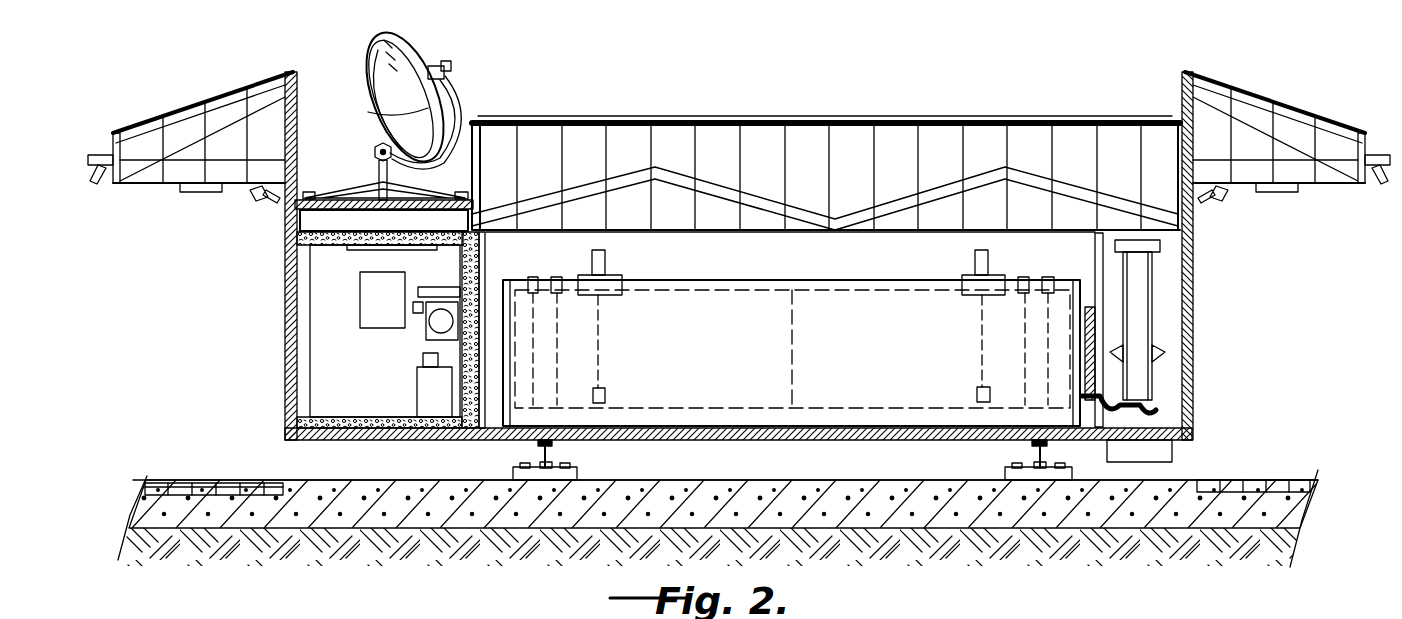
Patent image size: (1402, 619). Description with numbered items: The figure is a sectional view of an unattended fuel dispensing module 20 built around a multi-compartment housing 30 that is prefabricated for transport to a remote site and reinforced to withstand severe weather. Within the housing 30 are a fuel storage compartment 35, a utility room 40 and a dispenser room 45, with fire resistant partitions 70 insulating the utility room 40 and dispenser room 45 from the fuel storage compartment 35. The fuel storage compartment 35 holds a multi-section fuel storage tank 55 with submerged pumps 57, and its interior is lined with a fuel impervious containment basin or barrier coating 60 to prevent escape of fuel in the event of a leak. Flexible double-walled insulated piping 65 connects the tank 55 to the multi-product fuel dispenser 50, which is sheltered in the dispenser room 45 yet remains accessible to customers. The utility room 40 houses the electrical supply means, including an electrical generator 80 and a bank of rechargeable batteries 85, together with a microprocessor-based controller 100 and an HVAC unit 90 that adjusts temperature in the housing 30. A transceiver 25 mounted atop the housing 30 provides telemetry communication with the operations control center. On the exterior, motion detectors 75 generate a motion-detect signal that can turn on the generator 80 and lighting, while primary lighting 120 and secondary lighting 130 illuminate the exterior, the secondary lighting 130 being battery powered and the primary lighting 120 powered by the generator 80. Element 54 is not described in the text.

The fuel dispensing module 20 is at (767, 100).
The transceiver 25 is at (403, 50).
The multi-compartment housing 30 is at (282, 243).
The fuel storage compartment 35 is at (842, 270).
The utility room 40 is at (330, 362).
The dispenser room 45 is at (1157, 290).
The multi-product fuel dispenser 50 is at (1142, 338).
The sensor probe 54 is at (558, 338).
The fuel storage tank 55 is at (880, 360).
The submerged pump 57 is at (607, 395).
The containment basin or barrier coating 60 is at (540, 436).
The flexible double-walled insulated piping 65 is at (1172, 402).
The fire resistant partition 70 is at (478, 257).
The motion detector 75 is at (93, 183).
The electrical generator 80 is at (418, 312).
The rechargeable batteries 85 is at (427, 354).
The HVAC unit 90 is at (427, 394).
The microprocessor-based controller 100 is at (368, 297).
The primary lighting 120 is at (94, 148).
The secondary lighting 130 is at (207, 193).